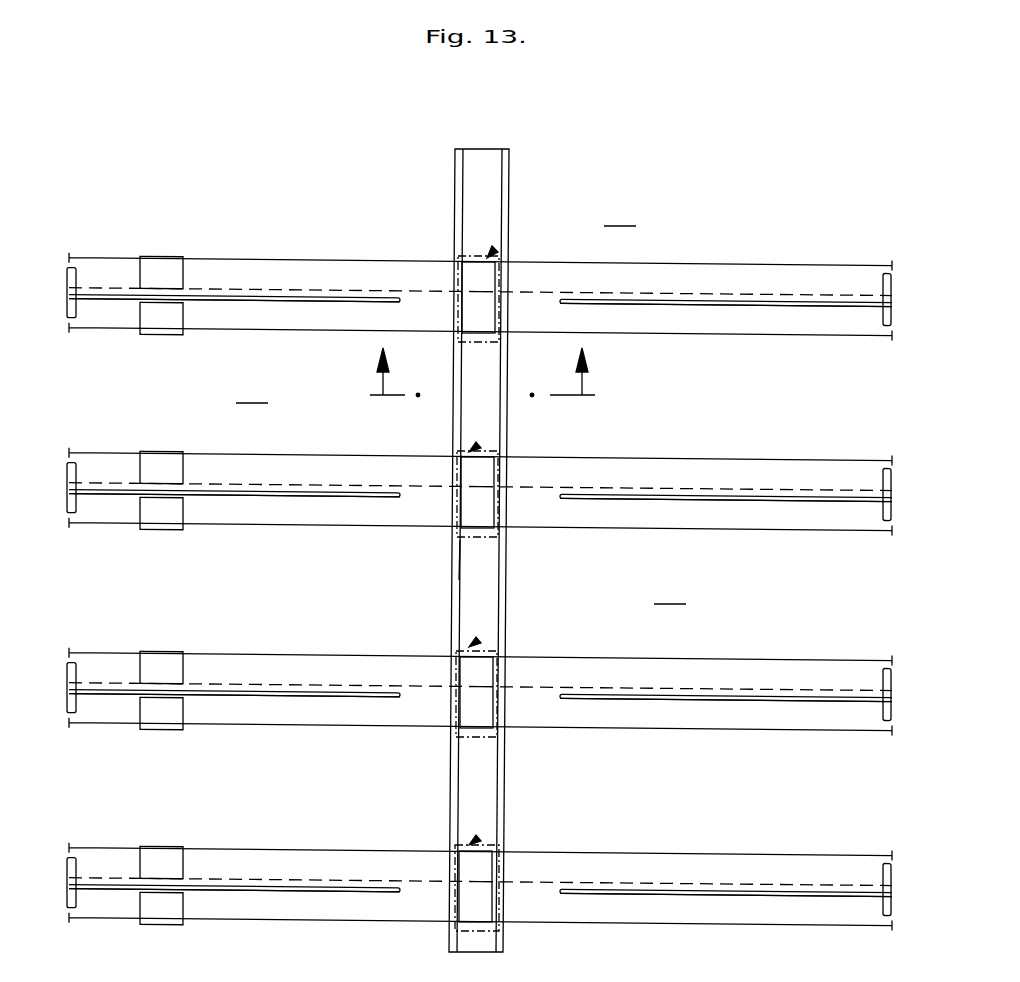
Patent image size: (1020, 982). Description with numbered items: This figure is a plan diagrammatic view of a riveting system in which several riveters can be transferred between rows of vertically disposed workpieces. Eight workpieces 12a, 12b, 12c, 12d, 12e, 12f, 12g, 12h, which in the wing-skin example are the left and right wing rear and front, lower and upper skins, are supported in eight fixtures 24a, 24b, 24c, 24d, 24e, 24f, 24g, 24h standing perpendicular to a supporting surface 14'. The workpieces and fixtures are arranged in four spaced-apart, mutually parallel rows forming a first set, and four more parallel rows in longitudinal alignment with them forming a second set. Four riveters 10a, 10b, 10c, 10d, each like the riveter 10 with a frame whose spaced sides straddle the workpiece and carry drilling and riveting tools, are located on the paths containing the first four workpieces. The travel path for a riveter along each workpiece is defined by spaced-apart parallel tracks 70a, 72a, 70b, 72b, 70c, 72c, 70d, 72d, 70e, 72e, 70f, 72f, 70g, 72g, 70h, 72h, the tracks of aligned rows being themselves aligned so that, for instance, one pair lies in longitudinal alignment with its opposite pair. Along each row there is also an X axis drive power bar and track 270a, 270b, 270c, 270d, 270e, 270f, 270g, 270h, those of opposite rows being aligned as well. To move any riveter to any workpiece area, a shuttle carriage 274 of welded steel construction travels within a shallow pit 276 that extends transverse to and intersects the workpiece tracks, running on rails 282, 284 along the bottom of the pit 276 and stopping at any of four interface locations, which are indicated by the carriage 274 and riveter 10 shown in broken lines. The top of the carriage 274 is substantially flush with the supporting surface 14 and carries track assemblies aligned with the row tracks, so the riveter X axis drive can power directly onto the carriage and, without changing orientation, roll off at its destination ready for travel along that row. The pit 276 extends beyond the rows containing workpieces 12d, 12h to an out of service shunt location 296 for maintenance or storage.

The riveter 10 is at (486, 283).
The riveter 10a is at (136, 860).
The riveter 10b is at (141, 717).
The riveter 10c is at (134, 464).
The riveter 10d is at (127, 319).
The workpiece 12a is at (274, 928).
The workpiece 12b is at (274, 729).
The workpiece 12c is at (274, 526).
The workpiece 12d is at (274, 336).
The workpiece 12e is at (686, 923).
The workpiece 12f is at (686, 725).
The workpiece 12g is at (686, 527).
The workpiece 12h is at (686, 335).
The fixture 24a is at (234, 923).
The fixture 24b is at (234, 726).
The fixture 24c is at (234, 529).
The fixture 24d is at (234, 332).
The fixture 24e is at (726, 924).
The fixture 24f is at (726, 727).
The fixture 24g is at (726, 531).
The fixture 24h is at (726, 339).
The track 70a is at (274, 934).
The track 70b is at (274, 737).
The track 70c is at (274, 541).
The track 70d is at (274, 344).
The track 70e is at (686, 940).
The track 70f is at (686, 740).
The track 70g is at (686, 544).
The track 70h is at (686, 348).
The track 72a is at (274, 834).
The track 72b is at (274, 631).
The track 72c is at (274, 442).
The track 72d is at (274, 240).
The track 72e is at (686, 832).
The track 72f is at (686, 640).
The track 72g is at (686, 444).
The track 72h is at (686, 249).
The X axis drive power bar and track 270a is at (233, 858).
The X axis drive power bar and track 270b is at (233, 657).
The X axis drive power bar and track 270c is at (233, 467).
The X axis drive power bar and track 270d is at (233, 262).
The X axis drive power bar and track 270e is at (726, 858).
The X axis drive power bar and track 270f is at (726, 669).
The X axis drive power bar and track 270g is at (726, 469).
The X axis drive power bar and track 270h is at (726, 267).
The shuttle carriage 274 is at (494, 250).
The pit 276 is at (483, 558).
The rail 282 is at (460, 762).
The rail 284 is at (492, 770).
The out of service shunt location 296 is at (488, 182).
The supporting surface 14 is at (478, 380).
The supporting surface 14' is at (461, 592).